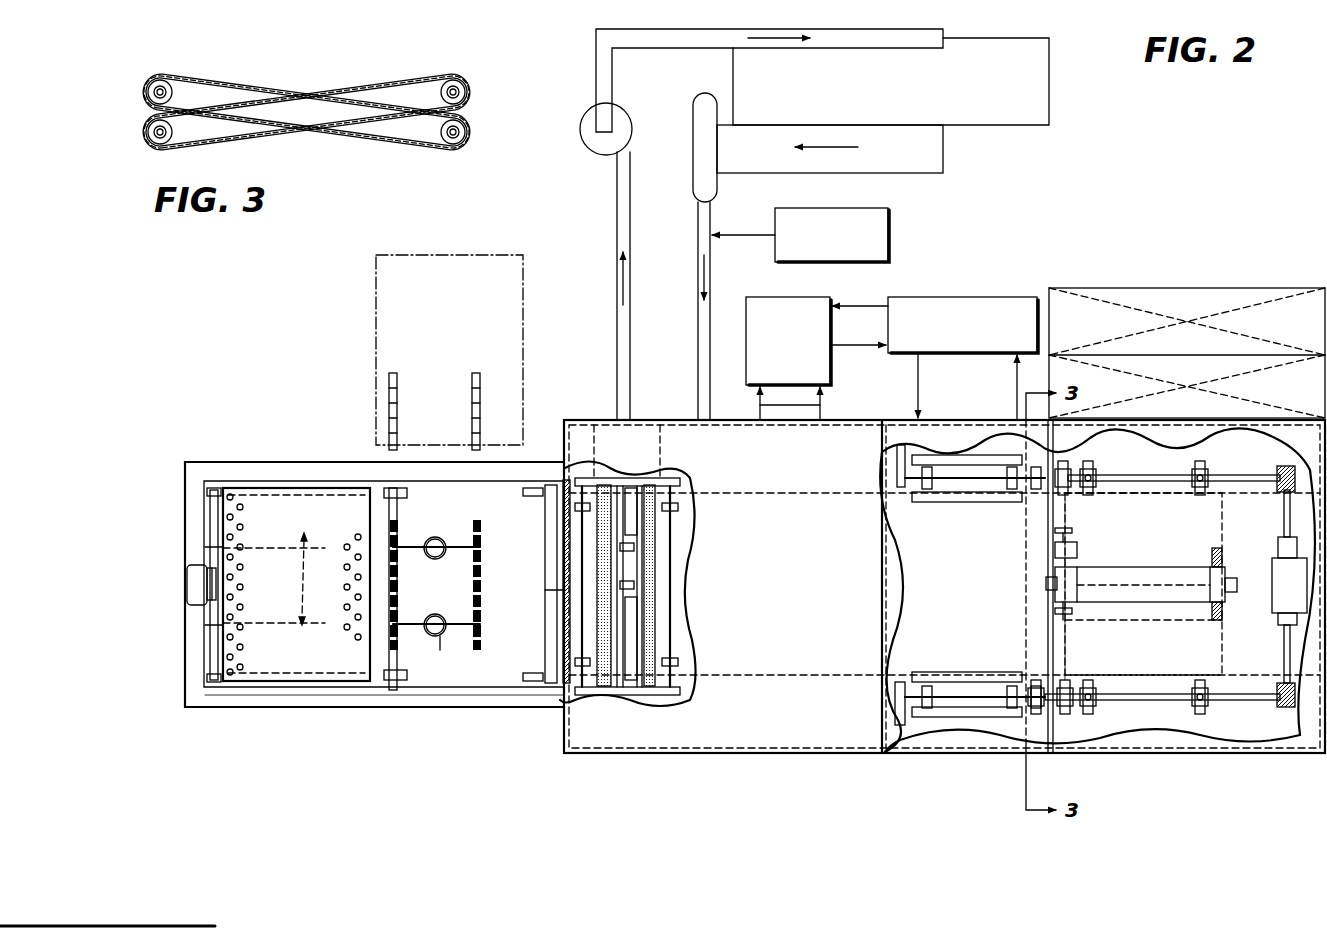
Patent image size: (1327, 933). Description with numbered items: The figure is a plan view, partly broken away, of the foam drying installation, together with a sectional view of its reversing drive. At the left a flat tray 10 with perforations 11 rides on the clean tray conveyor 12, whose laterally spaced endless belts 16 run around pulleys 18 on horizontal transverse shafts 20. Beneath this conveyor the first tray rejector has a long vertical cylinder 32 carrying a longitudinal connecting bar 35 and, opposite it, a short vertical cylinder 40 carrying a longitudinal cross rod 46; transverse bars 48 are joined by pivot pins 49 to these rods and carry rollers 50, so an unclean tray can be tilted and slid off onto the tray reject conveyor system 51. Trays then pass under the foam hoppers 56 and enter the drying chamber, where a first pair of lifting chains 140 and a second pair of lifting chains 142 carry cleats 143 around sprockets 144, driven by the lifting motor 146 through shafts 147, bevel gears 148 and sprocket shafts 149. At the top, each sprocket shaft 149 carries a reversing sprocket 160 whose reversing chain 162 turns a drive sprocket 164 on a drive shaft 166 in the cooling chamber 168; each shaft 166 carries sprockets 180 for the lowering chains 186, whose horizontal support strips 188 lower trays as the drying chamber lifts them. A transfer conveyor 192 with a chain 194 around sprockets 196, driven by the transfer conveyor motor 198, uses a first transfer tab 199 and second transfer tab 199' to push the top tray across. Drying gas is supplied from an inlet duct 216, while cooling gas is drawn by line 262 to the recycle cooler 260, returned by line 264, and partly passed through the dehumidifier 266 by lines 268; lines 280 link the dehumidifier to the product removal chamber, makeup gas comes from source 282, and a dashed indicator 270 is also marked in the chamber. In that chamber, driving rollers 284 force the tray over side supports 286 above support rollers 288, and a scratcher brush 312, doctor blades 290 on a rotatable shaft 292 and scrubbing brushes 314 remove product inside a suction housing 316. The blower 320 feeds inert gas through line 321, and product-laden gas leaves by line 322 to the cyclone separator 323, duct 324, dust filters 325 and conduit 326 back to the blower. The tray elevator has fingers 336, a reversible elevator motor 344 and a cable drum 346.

In FIG. 2, the flat tray 10 is at (376, 273).
In FIG. 2, the perforations 11 is at (243, 567).
In FIG. 2, the clean tray conveyor 12 is at (371, 685).
In FIG. 2, the endless belts 16 is at (377, 493).
In FIG. 2, the pulleys 18 is at (215, 487).
In FIG. 2, the shafts 20 is at (217, 515).
In FIG. 2, the long vertical cylinder 32 is at (440, 640).
In FIG. 2, the longitudinal connecting bar 35 is at (437, 614).
In FIG. 2, the short vertical cylinder 40 is at (437, 537).
In FIG. 2, the longitudinal cross rod 46 is at (463, 547).
In FIG. 2, the transverse bars 48 is at (392, 585).
In FIG. 2, the pivot pins 49 is at (392, 548).
In FIG. 2, the rollers 50 is at (390, 525).
In FIG. 2, the tray reject conveyor system 51 is at (420, 381).
In FIG. 2, the foam hoppers 56 is at (545, 515).
In FIG. 2, the first pair of lifting chains 140 is at (1102, 687).
In FIG. 2, the second pair of lifting chains 142 is at (1102, 494).
In FIG. 2, the cleats 143 is at (1088, 495).
In FIG. 2, the sprockets 144 is at (1203, 475).
In FIG. 2, the lifting motor 146 is at (1276, 596).
In FIG. 2, the shafts 147 is at (1284, 512).
In FIG. 2, the bevel gears 148 is at (1287, 468).
In FIG. 3, the sprocket shafts 149 is at (152, 125).
In FIG. 2, the sprocket shafts 149 is at (1172, 478).
In FIG. 3, the reversing sprocket 160 is at (152, 142).
In FIG. 2, the reversing sprocket 160 is at (1065, 470).
In FIG. 3, the reversing chain 162 is at (390, 82).
In FIG. 2, the reversing chain 162 is at (1035, 670).
In FIG. 3, the drive sprocket 164 is at (163, 80).
In FIG. 2, the drive sprocket 164 is at (1035, 490).
In FIG. 3, the drive shaft 166 is at (172, 85).
In FIG. 2, the drive shaft 166 is at (940, 458).
In FIG. 2, the cooling chamber 168 is at (878, 548).
In FIG. 2, the sprockets 180 is at (940, 500).
In FIG. 2, the lowering chains 186 is at (905, 478).
In FIG. 2, the horizontal support strips 188 is at (912, 458).
In FIG. 2, the transfer conveyor 192 is at (1122, 563).
In FIG. 2, the chain 194 is at (1120, 655).
In FIG. 2, the sprockets 196 is at (1140, 584).
In FIG. 2, the transfer conveyor motor 198 is at (1055, 550).
In FIG. 2, the first transfer tab 199 is at (1238, 581).
In FIG. 2, the second transfer tab 199' is at (1023, 598).
In FIG. 2, the inlet duct 216 is at (1192, 350).
In FIG. 2, the recycle cooler 260 is at (965, 297).
In FIG. 2, the line 262 is at (1017, 382).
In FIG. 2, the line 264 is at (918, 385).
In FIG. 2, the dehumidifier 266 is at (800, 297).
In FIG. 2, the lines 268 is at (863, 306).
In FIG. 2, the flow path 270 is at (772, 488).
In FIG. 2, the lines 280 is at (760, 405).
In FIG. 2, the makeup gas source 282 is at (888, 225).
In FIG. 2, the driving rollers 284 is at (565, 470).
In FIG. 2, the side supports 286 is at (617, 487).
In FIG. 2, the support rollers 288 is at (634, 585).
In FIG. 2, the doctor blades 290 is at (633, 612).
In FIG. 2, the rotatable shaft 292 is at (630, 692).
In FIG. 2, the scratcher brush 312 is at (645, 636).
In FIG. 2, the scrubbing brushes 314 is at (565, 600).
In FIG. 2, the suction housing 316 is at (660, 440).
In FIG. 2, the blower 320 is at (693, 150).
In FIG. 2, the line 321 is at (698, 220).
In FIG. 2, the line 322 is at (617, 230).
In FIG. 2, the cyclone separator 323 is at (582, 125).
In FIG. 2, the duct 324 is at (615, 75).
In FIG. 2, the dust filters 325 is at (1049, 105).
In FIG. 2, the conduit 326 is at (943, 150).
In FIG. 2, the fingers 336 is at (303, 535).
In FIG. 2, the elevator motor 344 is at (190, 580).
In FIG. 2, the drum 346 is at (190, 598).